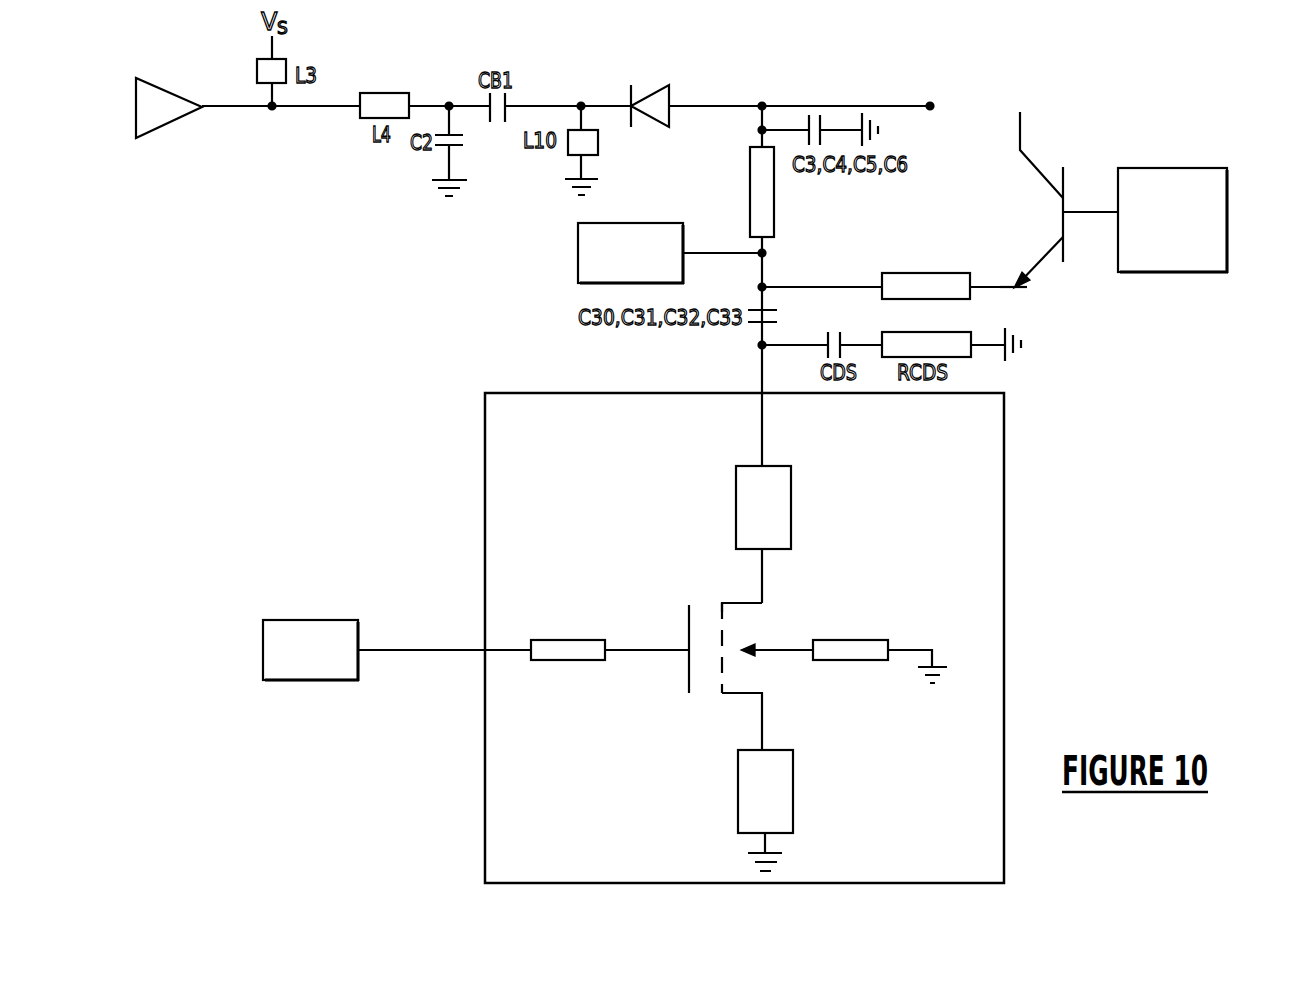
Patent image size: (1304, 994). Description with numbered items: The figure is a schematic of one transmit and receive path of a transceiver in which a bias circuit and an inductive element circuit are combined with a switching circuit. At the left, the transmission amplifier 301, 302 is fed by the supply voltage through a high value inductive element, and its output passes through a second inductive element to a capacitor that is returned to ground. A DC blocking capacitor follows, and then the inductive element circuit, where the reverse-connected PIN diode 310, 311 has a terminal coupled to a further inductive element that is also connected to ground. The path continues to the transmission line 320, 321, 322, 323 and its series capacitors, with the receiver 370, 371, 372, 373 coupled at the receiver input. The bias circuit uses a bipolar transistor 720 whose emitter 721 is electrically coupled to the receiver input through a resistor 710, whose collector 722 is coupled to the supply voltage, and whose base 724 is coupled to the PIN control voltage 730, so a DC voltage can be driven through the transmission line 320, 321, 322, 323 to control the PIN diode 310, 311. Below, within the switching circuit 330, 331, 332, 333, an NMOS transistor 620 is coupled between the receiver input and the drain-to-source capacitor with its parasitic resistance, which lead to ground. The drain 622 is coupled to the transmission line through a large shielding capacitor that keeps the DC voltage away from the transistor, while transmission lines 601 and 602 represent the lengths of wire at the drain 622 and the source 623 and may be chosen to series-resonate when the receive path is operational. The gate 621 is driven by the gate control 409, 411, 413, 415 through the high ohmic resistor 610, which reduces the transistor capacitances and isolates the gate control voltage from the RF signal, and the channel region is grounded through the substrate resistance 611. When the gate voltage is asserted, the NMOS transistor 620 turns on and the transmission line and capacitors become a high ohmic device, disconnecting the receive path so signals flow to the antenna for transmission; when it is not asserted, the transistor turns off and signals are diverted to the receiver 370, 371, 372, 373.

The amplifier 301 is at (197, 125).
The second transmission amplifier 302 is at (148, 134).
The PIN diode 310 is at (655, 89).
The PIN diode 311 is at (655, 89).
The transmission line 320 is at (856, 249).
The transmission line 321 is at (856, 249).
The transmission line 322 is at (856, 249).
The transmission line 323 is at (774, 205).
The switching circuit 330 is at (862, 638).
The switching circuit 331 is at (862, 638).
The switching circuit 332 is at (862, 638).
The switching circuit 333 is at (1150, 525).
The receiver 370 is at (609, 283).
The receiver 371 is at (609, 283).
The receiver 372 is at (609, 283).
The receiver 373 is at (578, 235).
The gate control 409 is at (378, 683).
The gate control 411 is at (378, 683).
The gate control 413 is at (378, 683).
The gate control 415 is at (310, 683).
The transmission line 601 is at (775, 534).
The transmission line 602 is at (780, 802).
The resistor 610 is at (560, 652).
The substrate resistance 611 is at (862, 645).
The NMOS transistor 620 is at (774, 644).
The gate 621 is at (688, 658).
The drain 622 is at (762, 584).
The source 623 is at (765, 703).
The resistor 710 is at (908, 289).
The bipolar transistor 720 is at (1111, 188).
The emitter 721 is at (1027, 287).
The collector 722 is at (1023, 152).
The base 724 is at (1093, 217).
The PIN control voltage 730 is at (1227, 230).